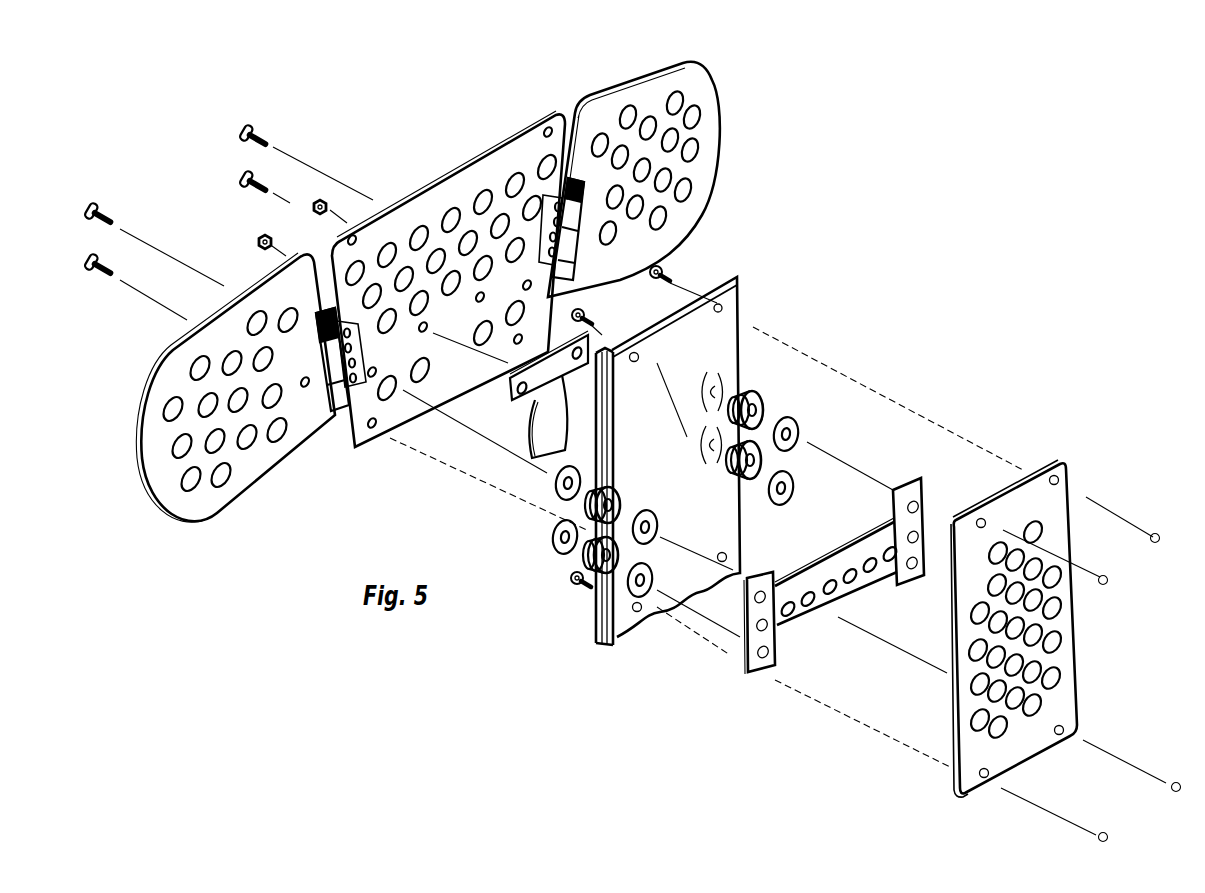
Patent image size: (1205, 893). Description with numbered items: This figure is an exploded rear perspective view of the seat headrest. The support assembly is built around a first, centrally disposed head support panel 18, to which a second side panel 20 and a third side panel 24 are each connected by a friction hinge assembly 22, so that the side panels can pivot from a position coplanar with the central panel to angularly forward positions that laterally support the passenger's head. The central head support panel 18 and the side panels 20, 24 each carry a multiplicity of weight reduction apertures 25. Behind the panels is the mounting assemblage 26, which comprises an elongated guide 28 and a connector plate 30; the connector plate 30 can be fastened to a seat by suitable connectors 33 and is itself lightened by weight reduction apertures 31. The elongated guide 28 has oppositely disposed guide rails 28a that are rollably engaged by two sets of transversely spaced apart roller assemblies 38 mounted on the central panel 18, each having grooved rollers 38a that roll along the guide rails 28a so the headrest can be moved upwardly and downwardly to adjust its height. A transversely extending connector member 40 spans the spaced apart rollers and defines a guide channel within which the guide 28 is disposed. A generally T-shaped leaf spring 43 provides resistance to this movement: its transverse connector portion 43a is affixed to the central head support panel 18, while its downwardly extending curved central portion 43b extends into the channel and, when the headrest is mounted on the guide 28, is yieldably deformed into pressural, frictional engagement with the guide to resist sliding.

The central head support panel 18 is at (458, 183).
The second side panel 20 is at (688, 75).
The friction hinge assembly 22 is at (327, 420).
The third side panel 24 is at (175, 363).
The weight reduction apertures 25 is at (697, 142).
The mounting assemblage 26 is at (878, 362).
The elongated guide 28 is at (718, 352).
The guide rails 28a is at (742, 278).
The connector plate 30 is at (1050, 518).
The weight reduction apertures 31 is at (1052, 680).
The connectors 33 is at (667, 260).
The roller assemblies 38 is at (770, 418).
The grooved rollers 38a is at (752, 398).
The connector member 40 is at (808, 620).
The leaf spring 43 is at (498, 402).
The transverse connector portion 43a is at (492, 400).
The curved central portion 43b is at (552, 415).